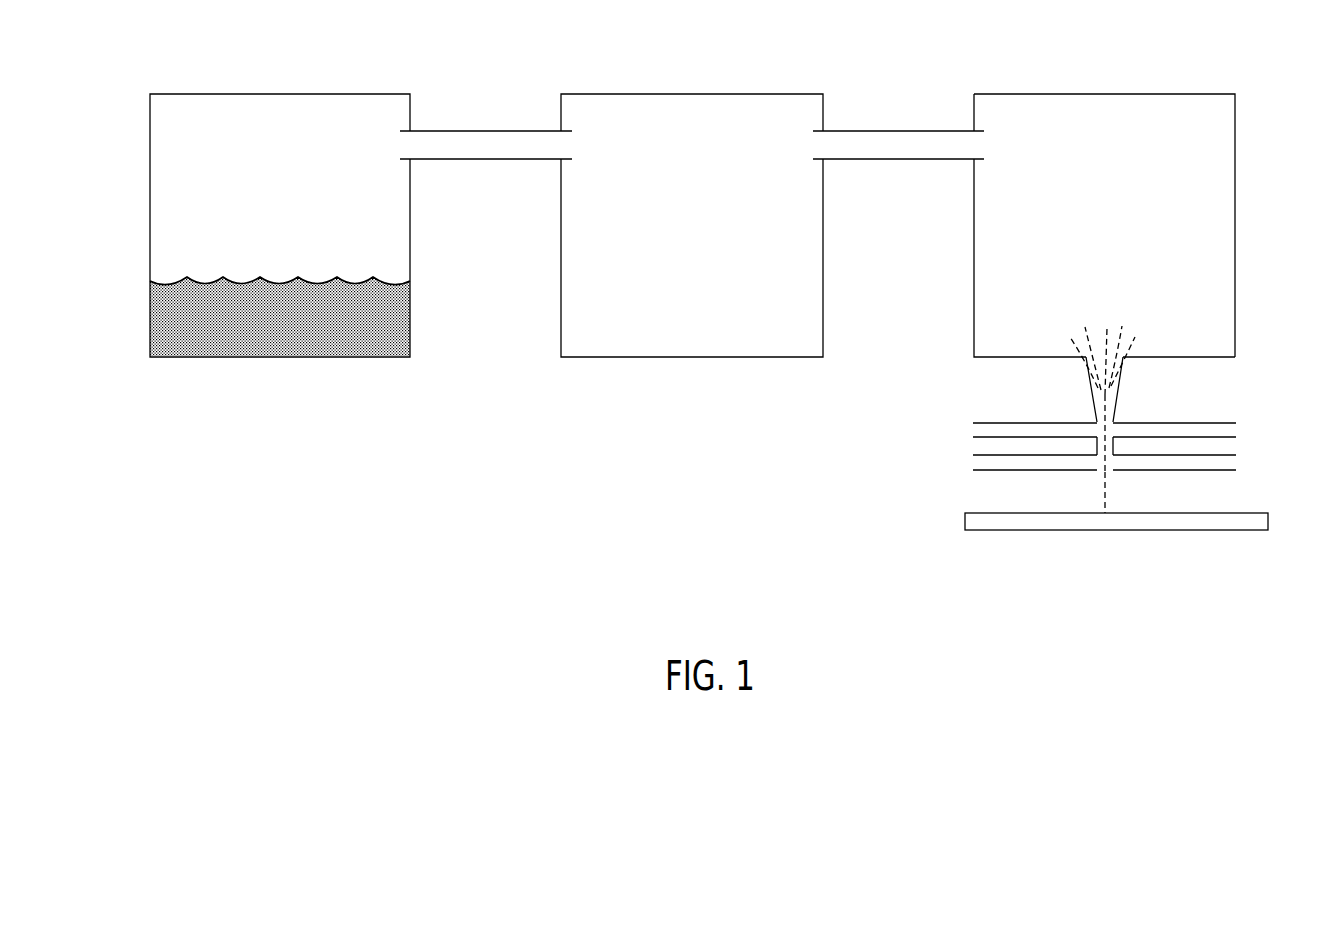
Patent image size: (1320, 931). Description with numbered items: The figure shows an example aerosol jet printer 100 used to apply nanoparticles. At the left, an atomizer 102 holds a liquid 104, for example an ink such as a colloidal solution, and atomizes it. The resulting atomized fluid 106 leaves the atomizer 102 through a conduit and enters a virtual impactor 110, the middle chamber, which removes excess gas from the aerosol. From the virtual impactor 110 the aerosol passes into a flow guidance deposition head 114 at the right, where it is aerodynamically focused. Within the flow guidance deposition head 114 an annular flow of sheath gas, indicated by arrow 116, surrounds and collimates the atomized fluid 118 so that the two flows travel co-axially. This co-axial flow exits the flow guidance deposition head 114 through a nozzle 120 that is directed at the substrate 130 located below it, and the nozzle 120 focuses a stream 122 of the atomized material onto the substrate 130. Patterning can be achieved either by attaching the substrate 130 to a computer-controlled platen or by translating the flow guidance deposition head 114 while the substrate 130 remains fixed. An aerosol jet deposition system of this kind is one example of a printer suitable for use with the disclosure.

The aerosol jet printer 100 is at (1140, 40).
The atomizer 102 is at (368, 357).
The liquid 104 is at (160, 322).
The atomized fluid 106 is at (430, 130).
The virtual impactor 110 is at (615, 357).
The flow guidance deposition head 114 is at (1235, 232).
The sheath gas 116 is at (973, 466).
The atomized fluid 118 is at (1225, 155).
The nozzle 120 is at (1108, 473).
The stream 122 is at (1104, 492).
The substrate 130 is at (1233, 530).